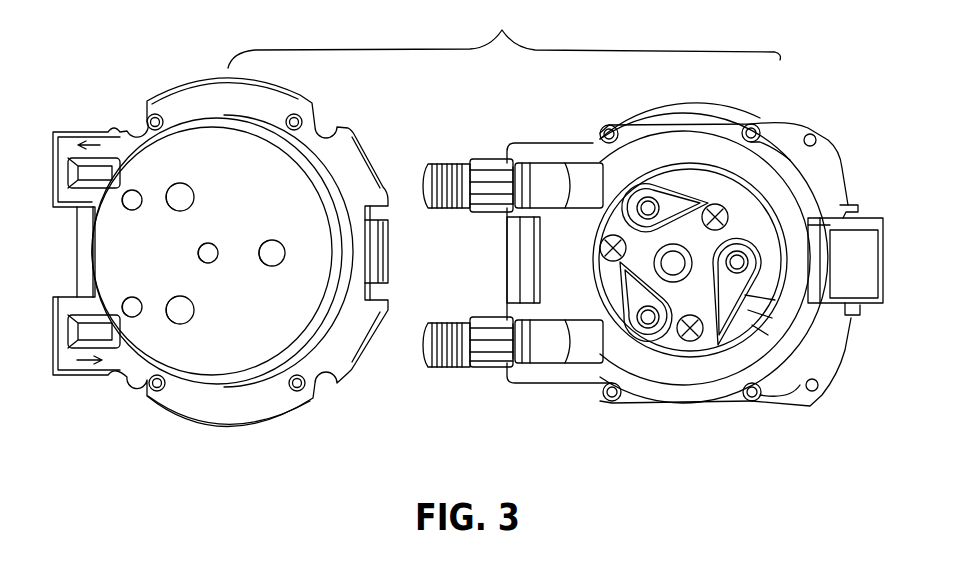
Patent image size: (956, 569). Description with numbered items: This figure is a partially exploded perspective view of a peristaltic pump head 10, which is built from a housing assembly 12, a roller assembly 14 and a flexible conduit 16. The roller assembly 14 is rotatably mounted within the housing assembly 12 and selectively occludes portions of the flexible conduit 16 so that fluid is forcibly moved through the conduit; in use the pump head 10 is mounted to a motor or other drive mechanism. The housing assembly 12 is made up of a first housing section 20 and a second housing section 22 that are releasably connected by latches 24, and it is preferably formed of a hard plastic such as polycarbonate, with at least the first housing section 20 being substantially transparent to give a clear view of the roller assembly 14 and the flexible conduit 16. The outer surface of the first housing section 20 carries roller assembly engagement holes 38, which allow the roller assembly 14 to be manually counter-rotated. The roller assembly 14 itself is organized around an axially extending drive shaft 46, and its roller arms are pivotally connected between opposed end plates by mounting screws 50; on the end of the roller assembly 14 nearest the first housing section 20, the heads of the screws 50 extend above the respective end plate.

The peristaltic pump head 10 is at (653, 506).
The housing assembly 12 is at (506, 27).
The roller assembly 14 is at (708, 366).
The flexible conduit 16 is at (630, 138).
The first housing section 20 is at (185, 108).
The second housing section 22 is at (548, 150).
The latches 24 is at (522, 263).
The roller assembly engagement holes 38 is at (182, 198).
The drive shaft 46 is at (668, 270).
The mounting screws 50 is at (723, 203).